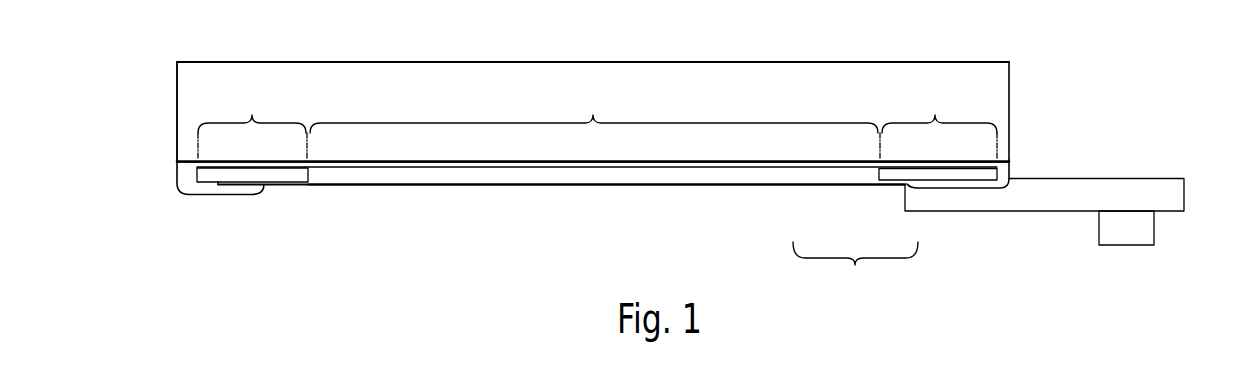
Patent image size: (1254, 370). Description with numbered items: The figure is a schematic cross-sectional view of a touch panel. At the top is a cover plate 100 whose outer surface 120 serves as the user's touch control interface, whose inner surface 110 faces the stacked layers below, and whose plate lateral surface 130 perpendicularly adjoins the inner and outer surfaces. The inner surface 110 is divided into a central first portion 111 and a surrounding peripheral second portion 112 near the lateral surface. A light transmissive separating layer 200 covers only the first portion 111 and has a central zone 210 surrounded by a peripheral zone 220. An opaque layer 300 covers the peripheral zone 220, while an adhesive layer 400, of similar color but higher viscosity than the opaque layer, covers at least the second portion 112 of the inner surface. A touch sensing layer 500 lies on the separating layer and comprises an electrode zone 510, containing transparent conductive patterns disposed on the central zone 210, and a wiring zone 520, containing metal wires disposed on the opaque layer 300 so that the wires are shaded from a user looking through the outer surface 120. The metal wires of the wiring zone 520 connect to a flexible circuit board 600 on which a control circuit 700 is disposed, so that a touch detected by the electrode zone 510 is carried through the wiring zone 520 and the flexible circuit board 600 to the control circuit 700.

The cover plate 100 is at (195, 80).
The inner surface 110 is at (213, 160).
The first portion 111 is at (353, 163).
The second portion 112 is at (178, 162).
The outer surface 120 is at (290, 62).
The plate lateral surface 130 is at (177, 108).
The light transmissive separating layer 200 is at (580, 165).
The central zone 210 is at (594, 109).
The peripheral zone 220 is at (597, 123).
The opaque layer 300 is at (268, 176).
The adhesive layer 400 is at (179, 183).
The touch sensing layer 500 is at (855, 268).
The electrode zone 510 is at (817, 185).
The wiring zone 520 is at (890, 185).
The flexible circuit board 600 is at (1160, 183).
The control circuit 700 is at (1147, 232).